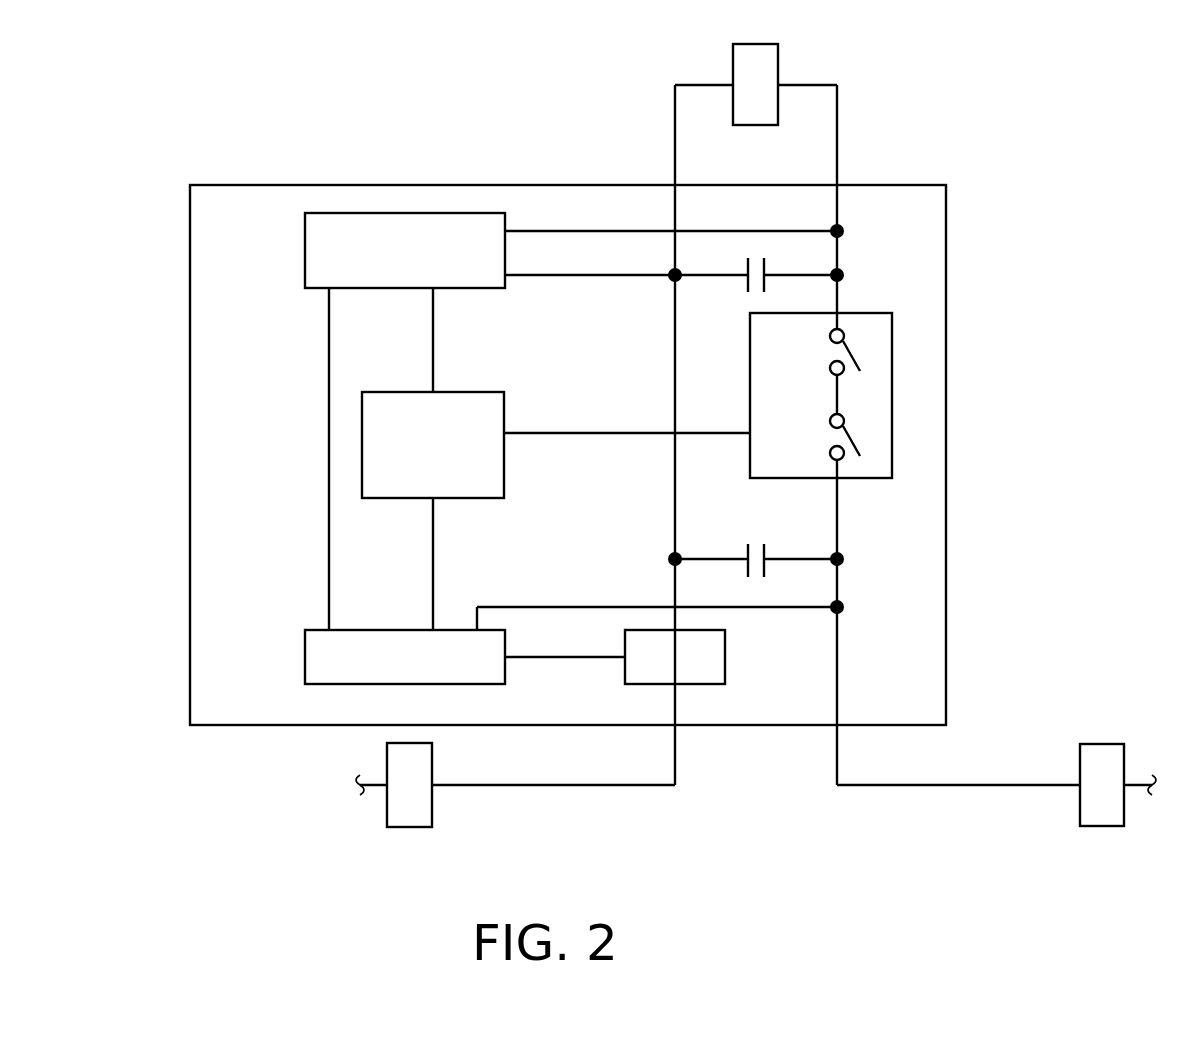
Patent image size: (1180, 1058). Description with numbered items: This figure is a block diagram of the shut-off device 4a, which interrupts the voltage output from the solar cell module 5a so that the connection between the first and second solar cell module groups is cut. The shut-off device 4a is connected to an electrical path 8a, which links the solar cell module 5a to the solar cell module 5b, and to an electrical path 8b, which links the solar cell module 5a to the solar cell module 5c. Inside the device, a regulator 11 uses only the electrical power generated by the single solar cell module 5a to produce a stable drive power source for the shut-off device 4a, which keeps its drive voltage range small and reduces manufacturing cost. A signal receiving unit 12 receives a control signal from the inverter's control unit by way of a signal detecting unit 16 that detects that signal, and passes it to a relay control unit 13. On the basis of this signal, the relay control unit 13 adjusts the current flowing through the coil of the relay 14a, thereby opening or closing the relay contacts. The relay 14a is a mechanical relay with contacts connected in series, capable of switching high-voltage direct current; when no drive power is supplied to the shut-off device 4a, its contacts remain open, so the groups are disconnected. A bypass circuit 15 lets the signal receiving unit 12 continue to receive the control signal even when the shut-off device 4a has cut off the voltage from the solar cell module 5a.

The shut-off device 4a is at (926, 182).
The solar cell module 5a is at (733, 57).
The solar cell module 5b is at (387, 811).
The solar cell module 5c is at (1102, 744).
The electrical path 8a is at (537, 785).
The electrical path 8b is at (987, 785).
The regulator 11 is at (305, 275).
The signal receiving unit 12 is at (305, 662).
The relay control unit 13 is at (362, 447).
The relay 14a is at (892, 425).
The bypass circuit 15 is at (783, 562).
The signal detecting unit 16 is at (712, 684).